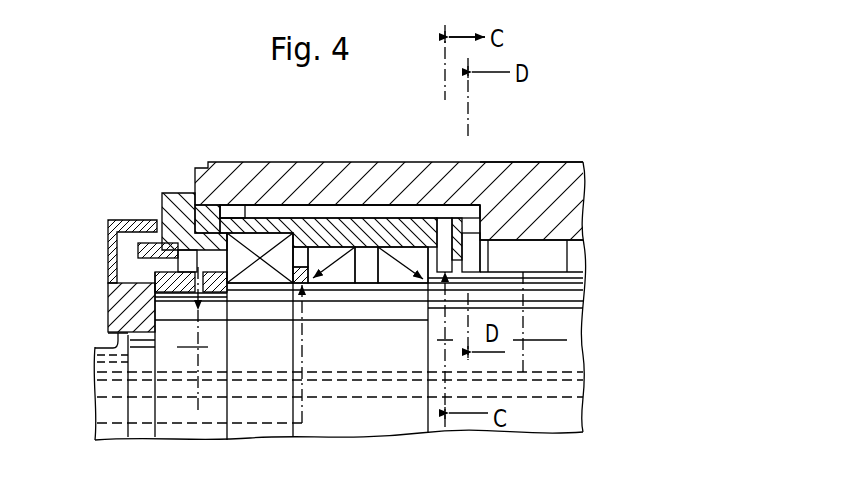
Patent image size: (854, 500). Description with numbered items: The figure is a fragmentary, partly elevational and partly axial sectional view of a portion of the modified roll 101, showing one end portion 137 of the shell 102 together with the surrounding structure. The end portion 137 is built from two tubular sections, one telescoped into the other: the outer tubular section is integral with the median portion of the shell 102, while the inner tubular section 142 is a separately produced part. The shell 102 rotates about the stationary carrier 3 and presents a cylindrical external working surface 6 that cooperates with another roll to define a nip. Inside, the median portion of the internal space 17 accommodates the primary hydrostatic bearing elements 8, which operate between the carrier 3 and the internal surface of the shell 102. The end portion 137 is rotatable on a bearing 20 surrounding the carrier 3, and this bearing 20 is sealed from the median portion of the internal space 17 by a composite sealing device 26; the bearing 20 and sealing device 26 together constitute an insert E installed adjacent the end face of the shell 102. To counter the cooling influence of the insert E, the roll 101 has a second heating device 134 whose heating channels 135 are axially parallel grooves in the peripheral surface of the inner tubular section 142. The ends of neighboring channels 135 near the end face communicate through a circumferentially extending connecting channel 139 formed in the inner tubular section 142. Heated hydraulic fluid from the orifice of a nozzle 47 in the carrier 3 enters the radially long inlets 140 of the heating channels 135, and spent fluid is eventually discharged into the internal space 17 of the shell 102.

The carrier 3 is at (570, 350).
The external working surface 6 is at (385, 162).
The primary hydrostatic bearing elements 8 is at (558, 260).
The internal space 17 is at (485, 262).
The bearing 20 is at (190, 267).
The composite sealing device 26 is at (346, 268).
The nozzle 47 is at (430, 292).
The modified roll 101 is at (540, 160).
The shell 102 is at (560, 197).
The second heating device 134 is at (263, 203).
The heating channels 135 is at (347, 213).
The end portion 137 is at (317, 185).
The connecting channel 139 is at (232, 215).
The inlets 140 is at (443, 233).
The inner tubular section 142 is at (200, 223).
The insert E is at (388, 347).